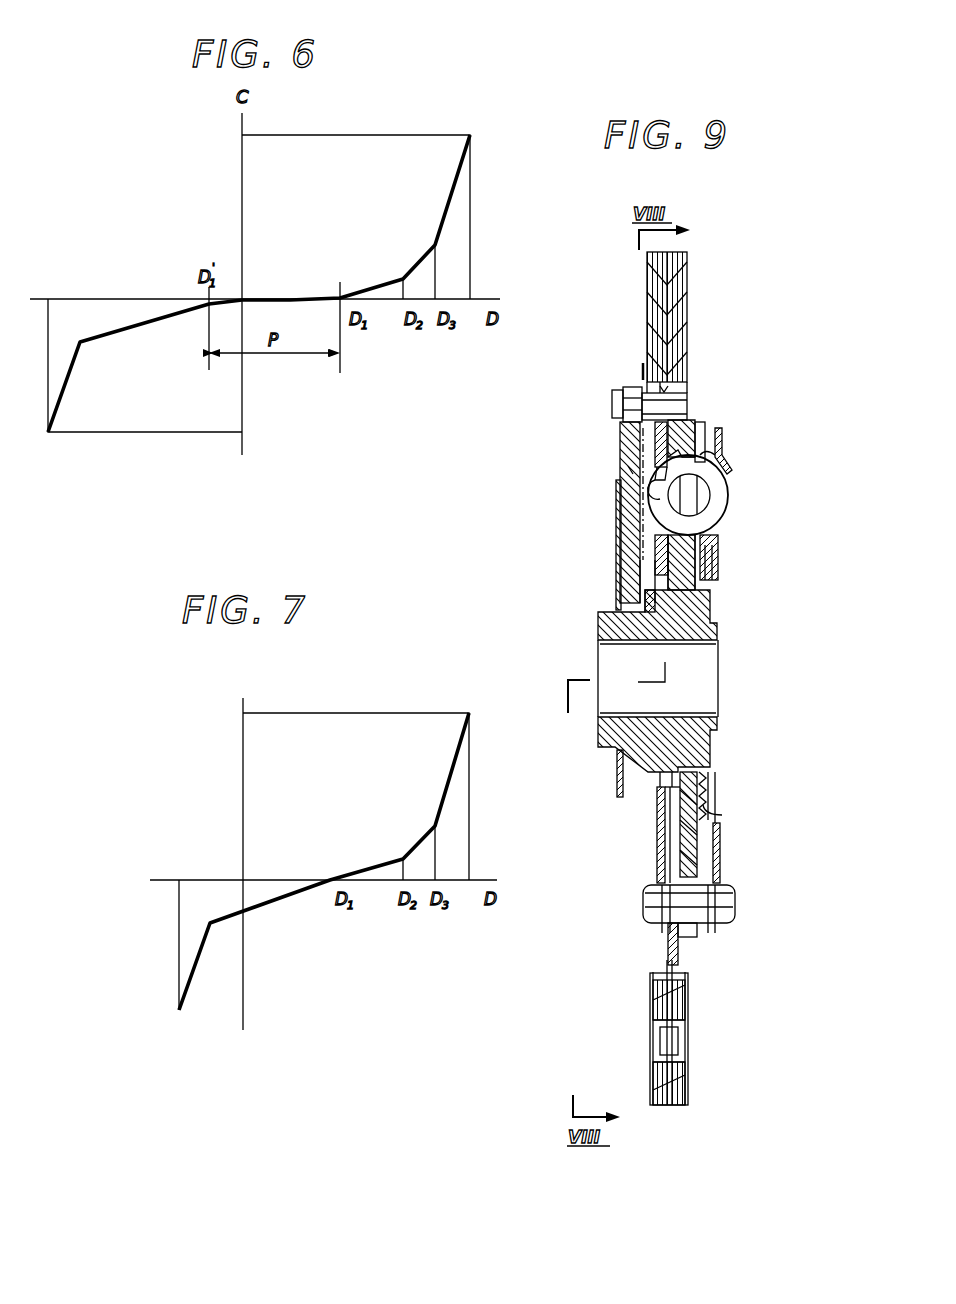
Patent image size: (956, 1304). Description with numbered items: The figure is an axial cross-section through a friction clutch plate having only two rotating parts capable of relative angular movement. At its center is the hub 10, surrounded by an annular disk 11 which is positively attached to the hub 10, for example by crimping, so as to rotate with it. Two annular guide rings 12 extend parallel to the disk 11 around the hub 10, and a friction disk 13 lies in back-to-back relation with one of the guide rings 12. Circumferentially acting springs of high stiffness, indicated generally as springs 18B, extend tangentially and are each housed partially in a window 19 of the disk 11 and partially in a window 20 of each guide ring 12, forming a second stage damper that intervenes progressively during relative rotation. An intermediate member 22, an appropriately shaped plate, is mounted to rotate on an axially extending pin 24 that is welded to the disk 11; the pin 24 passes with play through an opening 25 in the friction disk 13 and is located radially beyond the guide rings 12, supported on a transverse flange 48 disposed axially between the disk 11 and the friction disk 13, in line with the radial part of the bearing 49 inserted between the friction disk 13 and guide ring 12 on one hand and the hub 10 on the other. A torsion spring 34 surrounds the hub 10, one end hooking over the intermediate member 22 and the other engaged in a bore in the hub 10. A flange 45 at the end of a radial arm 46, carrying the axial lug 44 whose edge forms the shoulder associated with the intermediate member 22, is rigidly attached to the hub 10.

The hub 10 is at (729, 628).
The annular disk 11 is at (704, 425).
The annular guide rings 12 is at (640, 447).
The friction disk 13 is at (692, 289).
The second group of springs 18B is at (729, 501).
The window 19 is at (702, 455).
The window 20 is at (657, 527).
The intermediate member 22 is at (616, 440).
The pin 24 is at (691, 397).
The opening 25 is at (684, 378).
The torsion spring 34 is at (650, 590).
The axial lug 44 is at (628, 470).
The flange 45 is at (637, 578).
The radial arm 46 is at (616, 496).
The transverse flange 48 is at (686, 417).
The bearing 49 is at (673, 573).